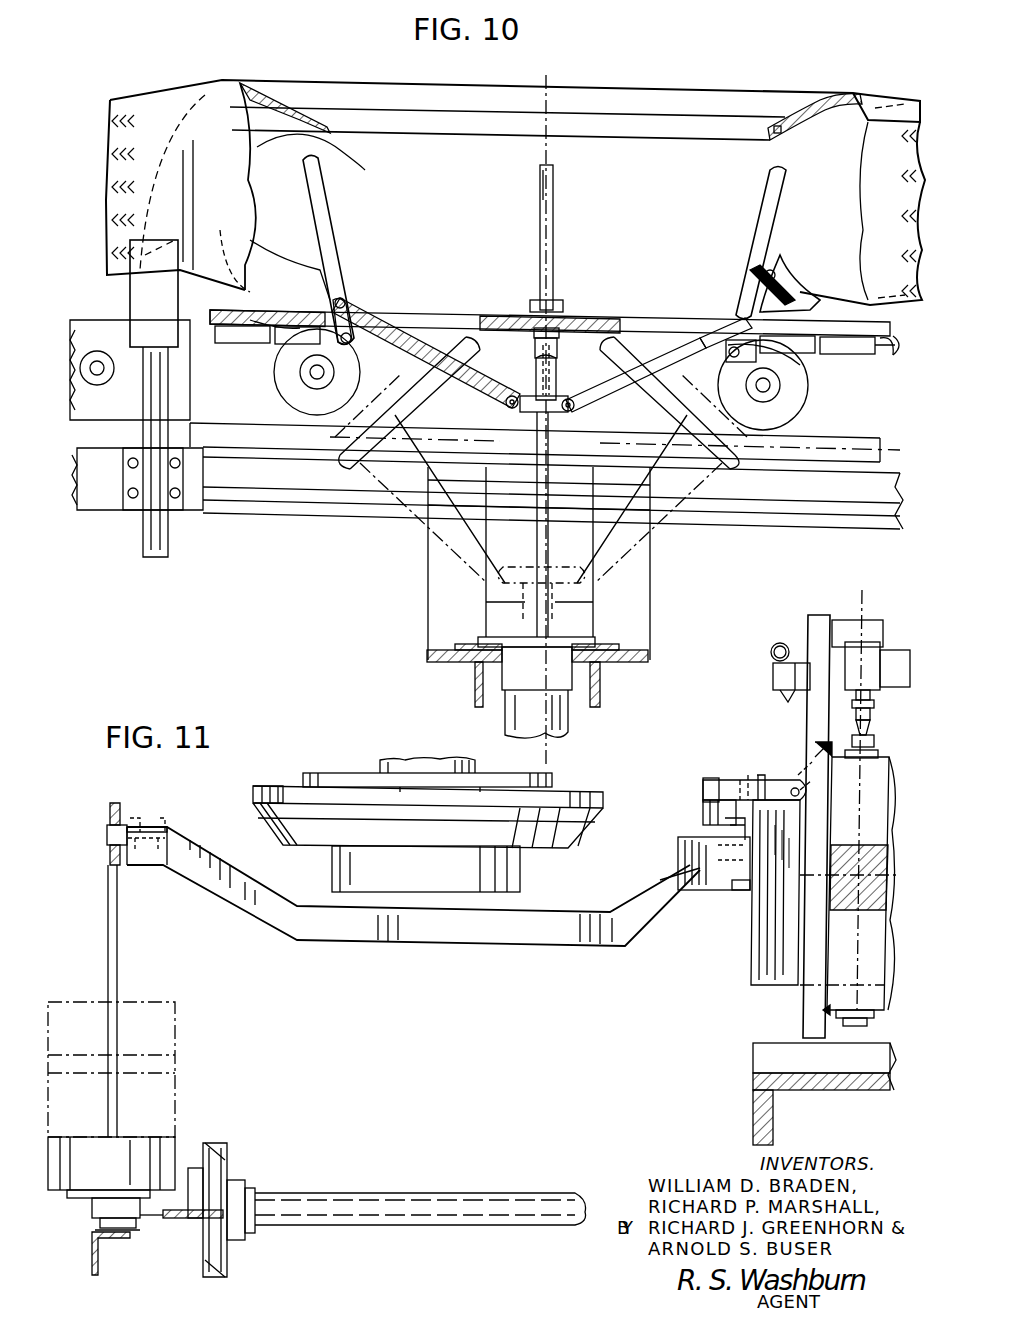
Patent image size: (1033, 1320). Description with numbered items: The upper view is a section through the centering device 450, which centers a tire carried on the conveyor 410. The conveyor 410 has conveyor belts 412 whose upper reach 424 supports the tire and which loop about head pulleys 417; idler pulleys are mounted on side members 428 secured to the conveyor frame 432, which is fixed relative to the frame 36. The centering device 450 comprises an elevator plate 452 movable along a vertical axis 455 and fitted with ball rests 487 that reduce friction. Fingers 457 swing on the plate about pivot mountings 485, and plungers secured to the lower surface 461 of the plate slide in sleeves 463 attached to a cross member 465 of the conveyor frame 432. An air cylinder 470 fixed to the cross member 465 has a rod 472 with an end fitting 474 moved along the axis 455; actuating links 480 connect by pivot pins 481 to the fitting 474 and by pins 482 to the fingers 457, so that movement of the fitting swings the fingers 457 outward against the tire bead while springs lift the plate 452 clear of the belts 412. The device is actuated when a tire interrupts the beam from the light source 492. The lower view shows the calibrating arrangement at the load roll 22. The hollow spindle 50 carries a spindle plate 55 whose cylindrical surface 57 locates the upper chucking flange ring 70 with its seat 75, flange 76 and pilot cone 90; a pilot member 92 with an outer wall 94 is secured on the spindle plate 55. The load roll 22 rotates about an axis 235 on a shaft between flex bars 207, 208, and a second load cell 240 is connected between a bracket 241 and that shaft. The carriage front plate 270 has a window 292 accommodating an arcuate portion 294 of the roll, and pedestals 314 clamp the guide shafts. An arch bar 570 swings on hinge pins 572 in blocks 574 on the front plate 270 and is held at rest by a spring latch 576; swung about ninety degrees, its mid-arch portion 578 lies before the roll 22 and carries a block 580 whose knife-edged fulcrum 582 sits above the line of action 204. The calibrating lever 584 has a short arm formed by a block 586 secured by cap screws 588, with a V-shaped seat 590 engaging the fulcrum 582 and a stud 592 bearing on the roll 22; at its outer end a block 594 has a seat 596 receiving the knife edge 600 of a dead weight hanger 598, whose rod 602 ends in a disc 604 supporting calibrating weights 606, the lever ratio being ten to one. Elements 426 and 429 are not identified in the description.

In FIG. 10, the centering device 450 is at (640, 235).
In FIG. 10, the vertical axis 455 is at (548, 148).
In FIG. 10, the elevator plate 452 is at (575, 310).
In FIG. 10, the lower surface 461 is at (525, 310).
In FIG. 10, the actuating links 480 is at (405, 312).
In FIG. 10, the fingers 457 is at (545, 205).
In FIG. 10, the pin 482 is at (350, 302).
In FIG. 10, the pivot pin 481 is at (500, 408).
In FIG. 10, the end fitting 474 is at (568, 412).
In FIG. 10, the pivot mounting 485 is at (275, 355).
In FIG. 10, the pulley 426 is at (800, 395).
In FIG. 11, the pulley 426 is at (228, 1162).
In FIG. 10, the upper reach 424 is at (892, 356).
In FIG. 11, the upper reach 424 is at (215, 1143).
In FIG. 10, the ball rests 487 is at (780, 300).
In FIG. 10, the side members 428 is at (105, 405).
In FIG. 11, the side members 428 is at (185, 1220).
In FIG. 10, the light source 492 is at (130, 255).
In FIG. 10, the conveyor 410 is at (100, 305).
In FIG. 11, the conveyor 410 is at (88, 1218).
In FIG. 10, the conveyor belts 412 is at (80, 322).
In FIG. 10, the conveyor frame 432 is at (110, 510).
In FIG. 11, the conveyor frame 432 is at (115, 1262).
In FIG. 10, the rod 472 is at (520, 565).
In FIG. 10, the cross member 465 is at (640, 655).
In FIG. 10, the sleeves 463 is at (580, 718).
In FIG. 10, the air cylinder 470 is at (560, 737).
In FIG. 11, the calibrating lever 584 is at (540, 945).
In FIG. 11, the upper chucking flange ring 70 is at (275, 787).
In FIG. 11, the outer cylindrical surface 57 is at (320, 778).
In FIG. 11, the spindle plate 55 is at (340, 773).
In FIG. 11, the hollow spindle 50 is at (415, 760).
In FIG. 11, the flange 76 is at (258, 792).
In FIG. 11, the circumferential seat 75 is at (258, 810).
In FIG. 11, the pilot cone 90 is at (285, 832).
In FIG. 11, the pilot member 92 is at (520, 860).
In FIG. 11, the outer wall 94 is at (340, 870).
In FIG. 11, the knife edge 600 is at (110, 830).
In FIG. 11, the block 594 is at (110, 840).
In FIG. 11, the V-shaped seat 596 is at (125, 822).
In FIG. 11, the dead weight hanger rod 602 is at (118, 948).
In FIG. 11, the dead weight hanger 598 is at (105, 972).
In FIG. 11, the calibrating weights 606 is at (155, 1145).
In FIG. 11, the disc 604 is at (90, 1200).
In FIG. 11, the head pulleys 417 is at (227, 1262).
In FIG. 11, the shaft 429 is at (405, 1195).
In FIG. 11, the load roll 22 is at (755, 992).
In FIG. 11, the front plate 270 is at (812, 615).
In FIG. 11, the bracket 241 is at (863, 620).
In FIG. 11, the rotation axis 235 is at (850, 625).
In FIG. 11, the second load cell 240 is at (882, 650).
In FIG. 11, the flex bar 207 is at (878, 755).
In FIG. 11, the pedestals 314 is at (848, 910).
In FIG. 11, the flex bar 208 is at (870, 1020).
In FIG. 11, the spring latch 576 is at (775, 676).
In FIG. 11, the arch bar 570 is at (760, 780).
In FIG. 11, the window 292 is at (808, 768).
In FIG. 11, the hinge pins 572 is at (800, 795).
In FIG. 11, the V-shaped seat 590 is at (745, 780).
In FIG. 11, the mid-arch portion 578 is at (710, 778).
In FIG. 11, the block 580 is at (706, 812).
In FIG. 11, the knife-edged fulcrum 582 is at (722, 825).
In FIG. 11, the cap screws 588 is at (678, 860).
In FIG. 11, the block 586 is at (685, 896).
In FIG. 11, the stud 592 is at (745, 890).
In FIG. 11, the arcuate portion 294 is at (753, 945).
In FIG. 11, the blocks 574 is at (784, 915).
In FIG. 11, the line of action 204 is at (775, 880).
In FIG. 11, the frame 36 is at (750, 1088).